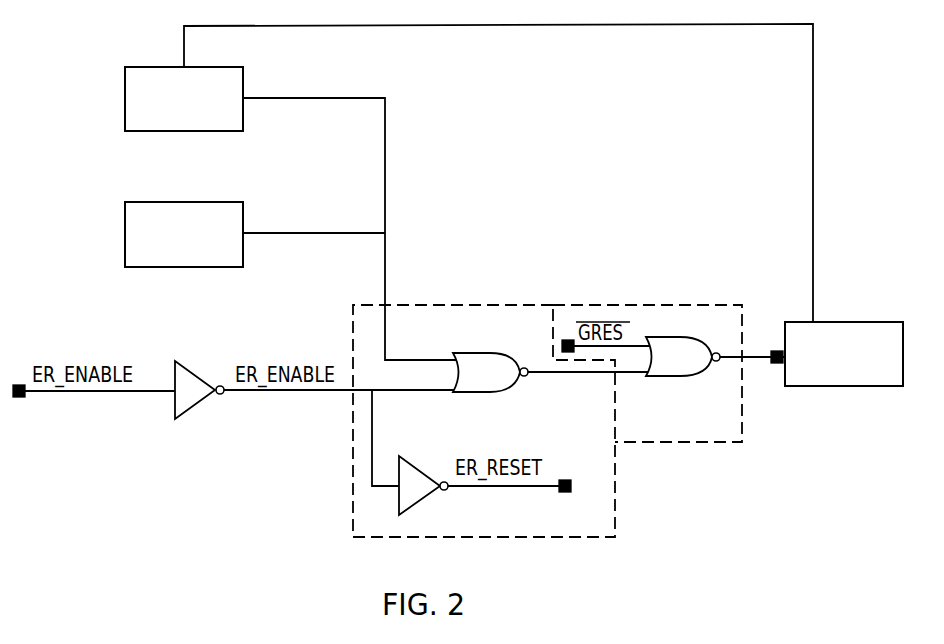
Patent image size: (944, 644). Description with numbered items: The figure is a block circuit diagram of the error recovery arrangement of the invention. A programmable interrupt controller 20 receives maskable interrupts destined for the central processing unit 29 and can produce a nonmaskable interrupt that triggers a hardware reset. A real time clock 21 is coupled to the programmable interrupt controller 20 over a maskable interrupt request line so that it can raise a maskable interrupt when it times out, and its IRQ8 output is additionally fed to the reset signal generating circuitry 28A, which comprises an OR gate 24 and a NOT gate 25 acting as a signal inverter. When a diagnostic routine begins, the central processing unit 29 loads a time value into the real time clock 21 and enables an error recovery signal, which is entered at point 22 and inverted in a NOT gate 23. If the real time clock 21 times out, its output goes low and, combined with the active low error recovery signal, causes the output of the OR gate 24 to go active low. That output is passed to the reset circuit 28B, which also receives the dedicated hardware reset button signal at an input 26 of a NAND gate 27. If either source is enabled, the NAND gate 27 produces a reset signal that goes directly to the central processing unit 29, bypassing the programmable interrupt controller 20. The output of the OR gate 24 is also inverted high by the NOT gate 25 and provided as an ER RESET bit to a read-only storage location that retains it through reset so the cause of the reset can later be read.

The programmable interrupt controller 20 is at (244, 77).
The real time clock 21 is at (244, 217).
The point 22 is at (25, 396).
The NOT gate 23 is at (190, 366).
The OR gate 24 is at (497, 353).
The NOT gate 25 is at (418, 500).
The input 26 is at (570, 340).
The NAND gate 27 is at (678, 378).
The reset signal generating circuitry 28A is at (497, 304).
The reset circuit 28B is at (712, 304).
The central processing unit 29 is at (878, 321).